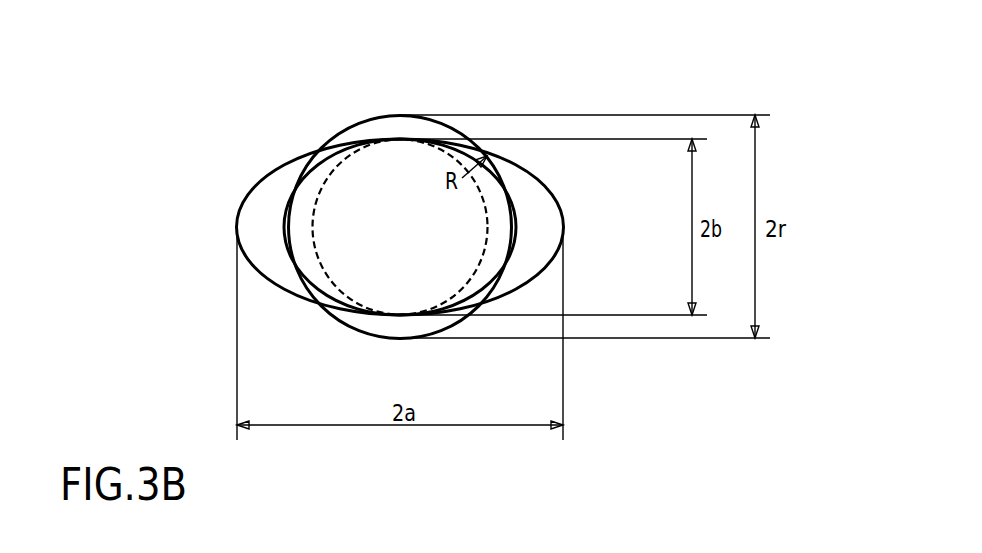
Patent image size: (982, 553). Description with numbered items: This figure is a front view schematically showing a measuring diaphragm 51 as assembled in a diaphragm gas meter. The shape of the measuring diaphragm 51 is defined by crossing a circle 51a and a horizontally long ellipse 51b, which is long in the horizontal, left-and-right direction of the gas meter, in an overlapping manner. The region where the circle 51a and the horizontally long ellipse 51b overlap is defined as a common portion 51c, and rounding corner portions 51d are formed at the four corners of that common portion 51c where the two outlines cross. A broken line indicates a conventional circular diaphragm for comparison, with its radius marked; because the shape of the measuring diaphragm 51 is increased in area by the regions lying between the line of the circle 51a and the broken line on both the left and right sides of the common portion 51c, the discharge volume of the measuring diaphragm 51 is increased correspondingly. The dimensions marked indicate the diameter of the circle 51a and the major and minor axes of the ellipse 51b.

The measuring diaphragm 51 is at (337, 152).
The circle 51a is at (400, 113).
The horizontally long ellipse 51b is at (530, 281).
The common portion 51c is at (428, 302).
The rounding corner portions 51d is at (492, 156).